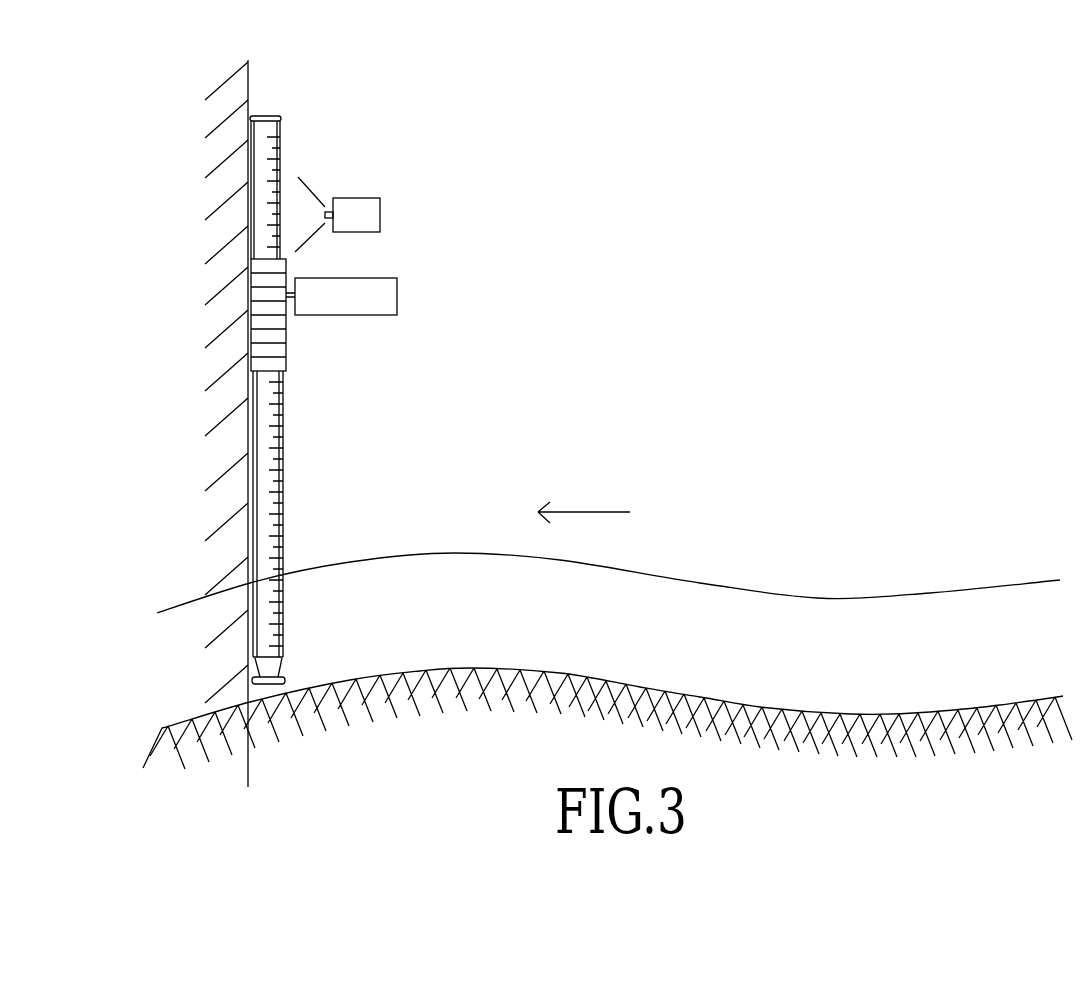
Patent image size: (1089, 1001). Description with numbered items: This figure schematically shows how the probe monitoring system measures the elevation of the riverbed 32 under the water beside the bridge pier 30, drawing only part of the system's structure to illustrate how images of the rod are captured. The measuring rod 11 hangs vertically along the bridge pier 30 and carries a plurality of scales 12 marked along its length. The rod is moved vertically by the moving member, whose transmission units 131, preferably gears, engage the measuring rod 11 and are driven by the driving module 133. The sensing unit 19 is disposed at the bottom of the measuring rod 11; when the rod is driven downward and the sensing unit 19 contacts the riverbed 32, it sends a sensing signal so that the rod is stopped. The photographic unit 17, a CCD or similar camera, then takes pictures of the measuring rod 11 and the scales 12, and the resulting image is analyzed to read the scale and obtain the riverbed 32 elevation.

The measuring rod 11 is at (283, 128).
The scales 12 is at (273, 493).
The transmission units 131 is at (287, 356).
The driving module 133 is at (397, 298).
The photographic unit 17 is at (380, 202).
The sensing unit 19 is at (285, 678).
The bridge pier 30 is at (252, 627).
The riverbed 32 is at (852, 712).